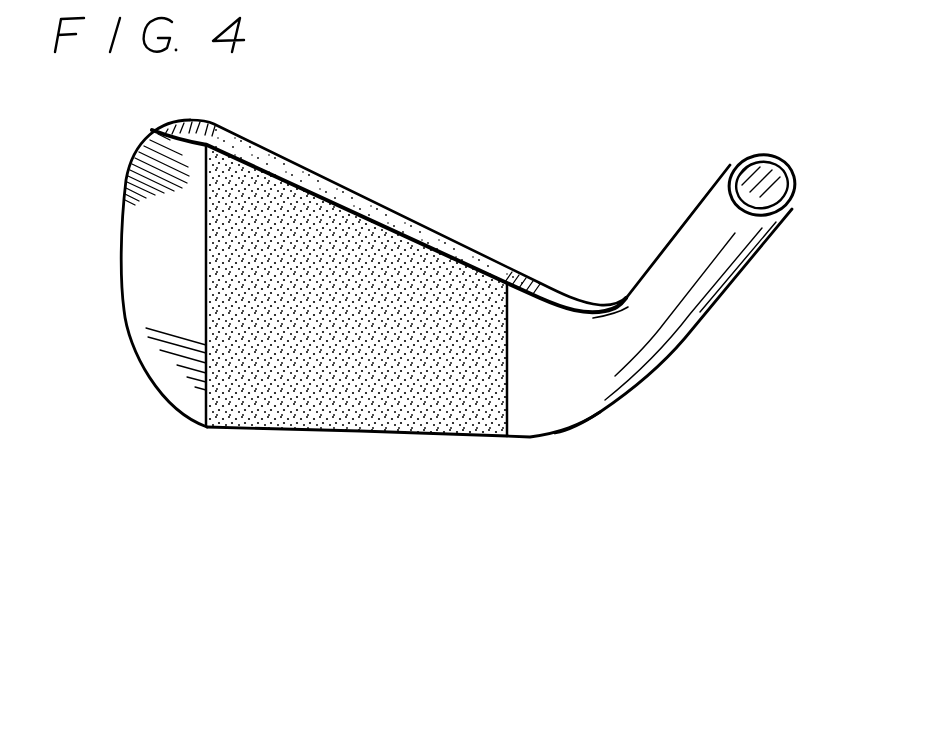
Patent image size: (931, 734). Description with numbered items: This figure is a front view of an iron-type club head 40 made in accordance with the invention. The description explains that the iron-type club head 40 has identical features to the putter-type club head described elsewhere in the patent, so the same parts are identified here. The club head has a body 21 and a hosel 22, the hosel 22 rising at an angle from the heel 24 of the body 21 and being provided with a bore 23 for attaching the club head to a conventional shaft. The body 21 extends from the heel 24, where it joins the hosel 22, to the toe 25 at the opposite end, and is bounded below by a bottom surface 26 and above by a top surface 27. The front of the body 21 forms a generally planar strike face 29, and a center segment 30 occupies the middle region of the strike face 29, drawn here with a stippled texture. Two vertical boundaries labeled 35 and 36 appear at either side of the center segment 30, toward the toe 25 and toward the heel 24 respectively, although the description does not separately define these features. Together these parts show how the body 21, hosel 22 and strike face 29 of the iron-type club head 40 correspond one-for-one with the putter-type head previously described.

The body 21 is at (287, 455).
The hosel 22 is at (711, 308).
The bore 23 is at (770, 182).
The heel 24 is at (553, 420).
The toe 25 is at (146, 320).
The bottom surface 26 is at (363, 436).
The top surface 27 is at (372, 208).
The strike face 29 is at (275, 411).
The center segment 30 is at (440, 268).
The toe groove 35 is at (198, 406).
The heel groove 36 is at (503, 418).
The iron-type club head 40 is at (672, 380).